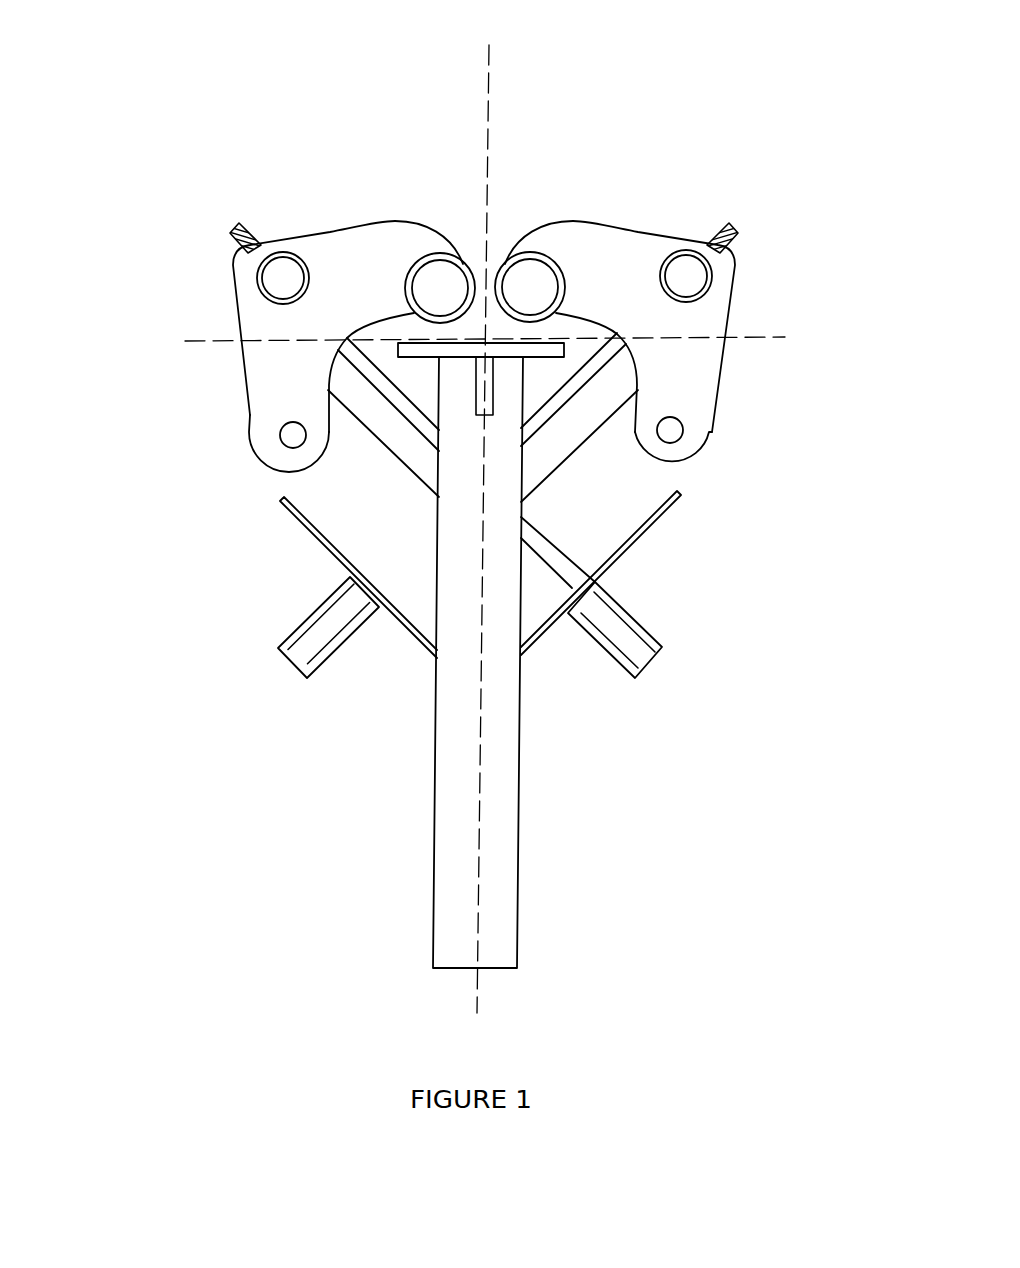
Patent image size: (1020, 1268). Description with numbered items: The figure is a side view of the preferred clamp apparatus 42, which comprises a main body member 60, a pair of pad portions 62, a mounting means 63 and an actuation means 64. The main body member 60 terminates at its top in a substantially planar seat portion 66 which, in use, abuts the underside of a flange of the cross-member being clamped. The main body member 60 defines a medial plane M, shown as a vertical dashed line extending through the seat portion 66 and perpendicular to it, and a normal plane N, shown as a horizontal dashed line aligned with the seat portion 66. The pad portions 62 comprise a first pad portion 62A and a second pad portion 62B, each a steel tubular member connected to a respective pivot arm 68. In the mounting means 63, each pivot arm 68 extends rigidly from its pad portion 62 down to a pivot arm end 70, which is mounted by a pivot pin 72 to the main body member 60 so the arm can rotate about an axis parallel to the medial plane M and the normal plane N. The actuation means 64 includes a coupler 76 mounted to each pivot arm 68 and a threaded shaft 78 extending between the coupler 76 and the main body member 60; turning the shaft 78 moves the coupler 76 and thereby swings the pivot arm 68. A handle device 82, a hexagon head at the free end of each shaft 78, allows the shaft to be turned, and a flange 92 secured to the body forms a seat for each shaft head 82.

The clamp apparatus 42 is at (313, 93).
The main body member 60 is at (507, 896).
The pad portions 62 is at (600, 128).
The first pad portion 62A is at (463, 264).
The second pad portion 62B is at (547, 257).
The mounting means 63 is at (847, 457).
The actuation means 64 is at (62, 282).
The seat portion 66 is at (537, 357).
The pivot arm 68 is at (322, 245).
The pivot arm end 70 is at (680, 455).
The pivot pin 72 is at (293, 435).
The coupler 76 is at (268, 278).
The shaft 78 is at (233, 233).
The handle device 82 is at (302, 657).
The flange 92 is at (317, 543).
The medial plane M is at (493, 58).
The normal plane N is at (197, 342).